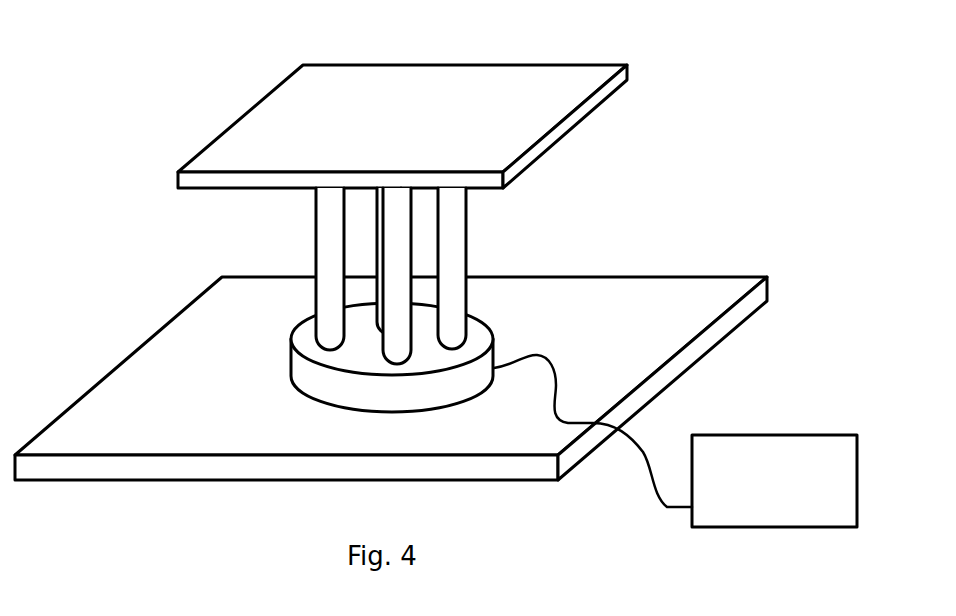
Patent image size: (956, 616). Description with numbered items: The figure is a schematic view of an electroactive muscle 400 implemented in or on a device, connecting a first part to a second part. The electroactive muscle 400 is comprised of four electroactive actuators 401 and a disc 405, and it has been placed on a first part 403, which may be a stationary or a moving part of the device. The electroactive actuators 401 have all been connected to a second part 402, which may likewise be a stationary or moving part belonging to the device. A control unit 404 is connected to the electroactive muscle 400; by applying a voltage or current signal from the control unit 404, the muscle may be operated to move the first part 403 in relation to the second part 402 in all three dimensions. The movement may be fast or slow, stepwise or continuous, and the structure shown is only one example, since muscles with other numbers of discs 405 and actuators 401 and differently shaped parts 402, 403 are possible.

The electroactive muscle 400 is at (738, 150).
The electroactive actuators 401 is at (332, 240).
The second part 402 is at (288, 138).
The first part 403 is at (118, 425).
The control unit 404 is at (675, 441).
The disc 405 is at (335, 380).